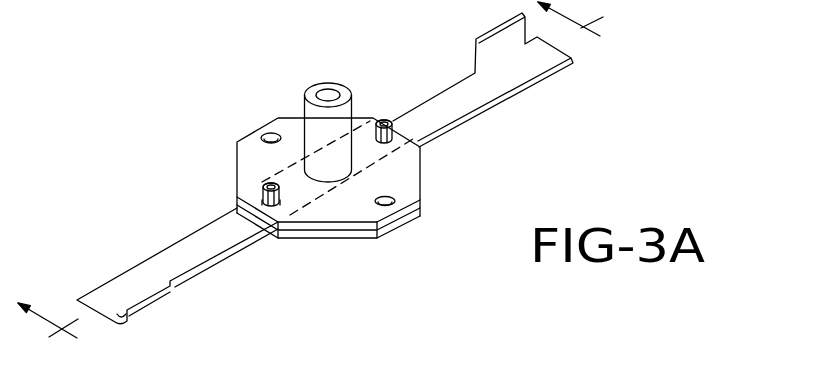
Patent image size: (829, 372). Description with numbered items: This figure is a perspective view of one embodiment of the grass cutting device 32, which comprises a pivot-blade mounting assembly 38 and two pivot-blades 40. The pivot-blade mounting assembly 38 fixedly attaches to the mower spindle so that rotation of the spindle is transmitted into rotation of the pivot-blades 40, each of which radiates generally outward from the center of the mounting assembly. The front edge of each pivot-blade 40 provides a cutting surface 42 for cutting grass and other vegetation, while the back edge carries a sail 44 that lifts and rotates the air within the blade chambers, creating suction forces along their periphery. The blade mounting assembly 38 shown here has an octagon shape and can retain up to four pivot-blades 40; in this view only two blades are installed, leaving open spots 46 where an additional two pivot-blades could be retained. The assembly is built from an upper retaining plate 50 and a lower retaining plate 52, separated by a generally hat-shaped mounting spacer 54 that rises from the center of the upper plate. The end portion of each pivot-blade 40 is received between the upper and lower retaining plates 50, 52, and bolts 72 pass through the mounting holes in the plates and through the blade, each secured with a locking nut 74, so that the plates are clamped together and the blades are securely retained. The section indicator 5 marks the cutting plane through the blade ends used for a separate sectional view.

The grass cutting device 32 is at (280, 70).
The pivot-blade mounting assembly 38 is at (212, 93).
The pivot-blade 40 is at (203, 227).
The cutting surface 42 is at (177, 242).
The sail 44 is at (157, 288).
The open spots 46 is at (260, 134).
The upper retaining plate 50 is at (312, 222).
The lower retaining plate 52 is at (348, 246).
The mounting spacer 54 is at (332, 81).
The bolt 72 is at (270, 183).
The locking nut 74 is at (264, 192).
The section line 5- 5 is at (322, 180).